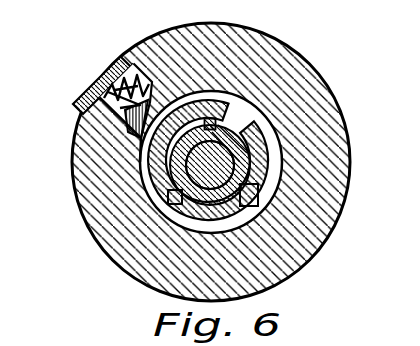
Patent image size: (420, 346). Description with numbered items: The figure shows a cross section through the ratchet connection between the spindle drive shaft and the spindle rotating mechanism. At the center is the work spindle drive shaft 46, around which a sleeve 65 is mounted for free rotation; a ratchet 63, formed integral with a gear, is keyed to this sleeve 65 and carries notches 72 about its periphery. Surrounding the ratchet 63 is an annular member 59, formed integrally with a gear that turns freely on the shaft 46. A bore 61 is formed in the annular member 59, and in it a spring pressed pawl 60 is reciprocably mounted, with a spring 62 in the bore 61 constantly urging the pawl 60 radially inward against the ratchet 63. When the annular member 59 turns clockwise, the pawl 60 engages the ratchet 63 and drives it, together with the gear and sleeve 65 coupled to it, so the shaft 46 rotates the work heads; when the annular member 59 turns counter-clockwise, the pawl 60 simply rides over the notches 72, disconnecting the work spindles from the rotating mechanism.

The work spindle drive shaft 46 is at (235, 167).
The annular member 59 is at (282, 55).
The spring pressed pawl 60 is at (135, 126).
The bore 61 is at (139, 144).
The spring 62 is at (132, 97).
The ratchet 63 is at (244, 143).
The sleeve 65 is at (215, 121).
The notches 72 is at (252, 112).